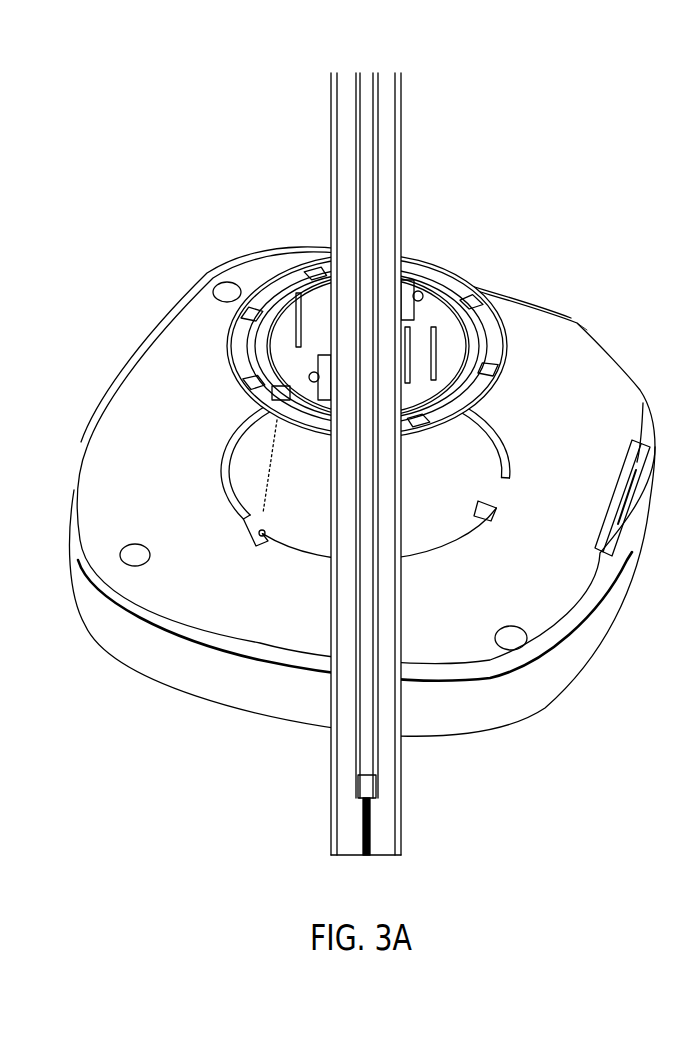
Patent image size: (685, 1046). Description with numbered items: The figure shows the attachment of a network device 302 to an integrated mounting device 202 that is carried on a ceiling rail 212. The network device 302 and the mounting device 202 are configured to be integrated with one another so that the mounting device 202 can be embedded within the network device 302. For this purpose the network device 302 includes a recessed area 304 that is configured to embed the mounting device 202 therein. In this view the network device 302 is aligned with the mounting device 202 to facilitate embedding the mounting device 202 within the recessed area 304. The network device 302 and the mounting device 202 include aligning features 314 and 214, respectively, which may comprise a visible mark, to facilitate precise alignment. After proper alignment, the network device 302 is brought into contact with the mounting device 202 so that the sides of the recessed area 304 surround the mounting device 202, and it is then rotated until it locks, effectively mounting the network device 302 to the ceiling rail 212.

The ceiling rail 212 is at (400, 160).
The mounting device 202 is at (448, 272).
The network device 302 is at (168, 320).
The aligning feature 214 is at (282, 393).
The aligning feature 314 is at (262, 533).
The recessed area 304 is at (313, 523).